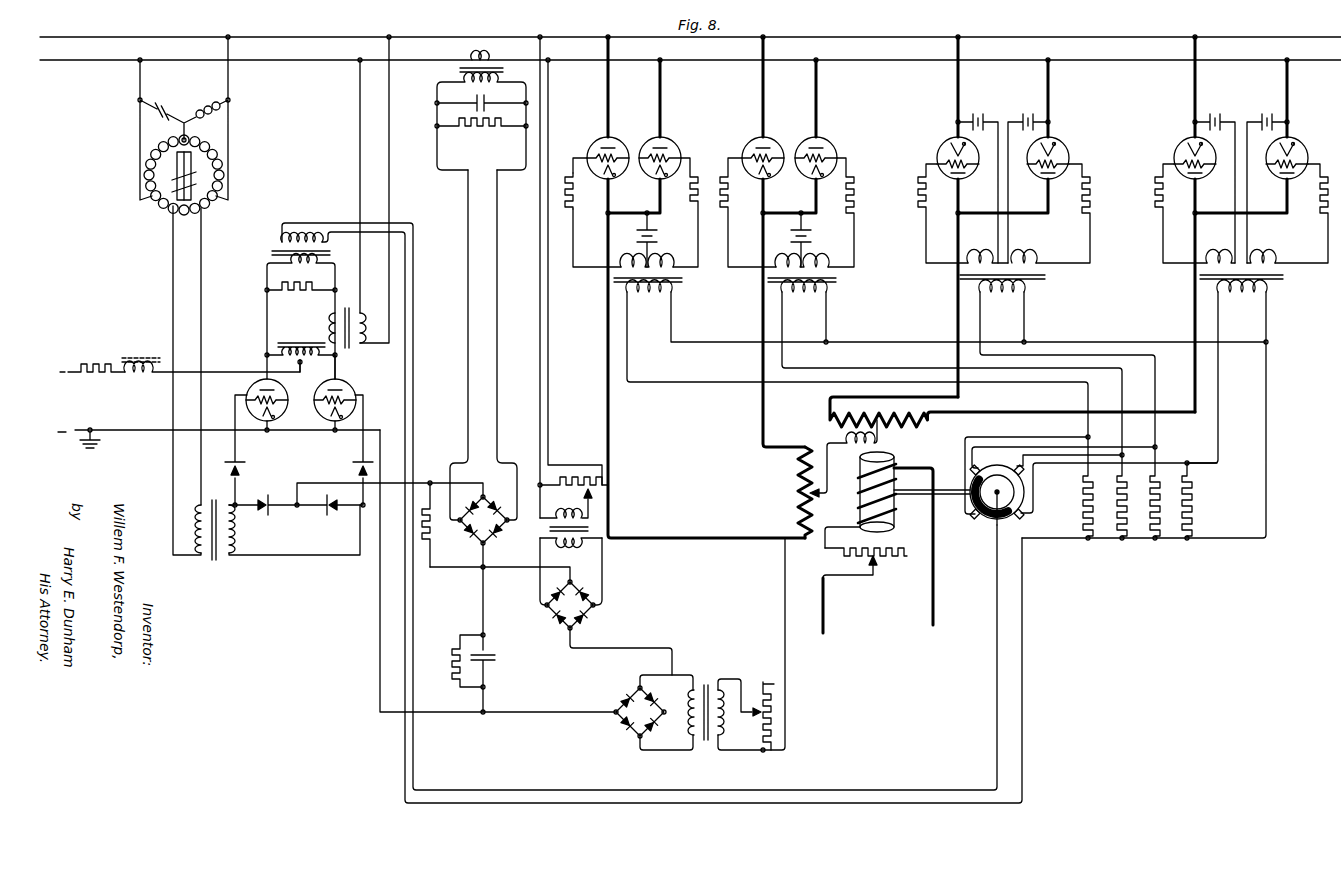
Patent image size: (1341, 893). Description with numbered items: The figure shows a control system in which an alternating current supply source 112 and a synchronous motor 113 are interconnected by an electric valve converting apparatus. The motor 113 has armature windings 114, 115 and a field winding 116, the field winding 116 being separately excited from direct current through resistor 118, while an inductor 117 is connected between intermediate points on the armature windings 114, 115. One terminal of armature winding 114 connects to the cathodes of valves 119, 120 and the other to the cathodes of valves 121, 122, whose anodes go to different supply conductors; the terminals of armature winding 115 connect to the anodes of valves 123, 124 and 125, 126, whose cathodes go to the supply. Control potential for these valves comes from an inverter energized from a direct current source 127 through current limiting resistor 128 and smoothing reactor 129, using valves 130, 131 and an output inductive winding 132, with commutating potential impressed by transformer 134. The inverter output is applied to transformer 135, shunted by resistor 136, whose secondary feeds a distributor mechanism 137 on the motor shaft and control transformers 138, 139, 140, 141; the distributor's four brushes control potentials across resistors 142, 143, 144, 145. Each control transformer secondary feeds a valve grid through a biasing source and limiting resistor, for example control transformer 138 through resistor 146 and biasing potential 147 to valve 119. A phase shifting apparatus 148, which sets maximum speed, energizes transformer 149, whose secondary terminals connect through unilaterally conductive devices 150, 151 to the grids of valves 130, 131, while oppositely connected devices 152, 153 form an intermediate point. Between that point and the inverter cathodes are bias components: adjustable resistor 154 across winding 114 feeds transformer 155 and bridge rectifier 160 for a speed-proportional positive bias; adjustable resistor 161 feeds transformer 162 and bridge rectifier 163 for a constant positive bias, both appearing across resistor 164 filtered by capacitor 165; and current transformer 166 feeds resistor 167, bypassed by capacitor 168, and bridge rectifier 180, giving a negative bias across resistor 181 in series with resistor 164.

The alternating current supply source 112 is at (93, 37).
The motor 113 is at (904, 588).
The armature winding 114 is at (803, 478).
The armature winding 115 is at (824, 417).
The field winding 116 is at (860, 480).
The inductor 117 is at (878, 443).
The resistor 118 is at (897, 542).
The electric valve 119 is at (619, 144).
The electric valve 120 is at (673, 143).
The electric valve 121 is at (773, 143).
The electric valve 122 is at (827, 143).
The electric valve 123 is at (938, 150).
The electric valve 124 is at (1070, 150).
The electric valve 125 is at (1175, 150).
The electric valve 126 is at (1309, 150).
The source of direct current 127 is at (68, 430).
The current limiting resistor 128 is at (96, 368).
The smoothing reactor 129 is at (138, 359).
The electric valve 130 is at (287, 395).
The electric valve 131 is at (347, 395).
The output inductive winding 132 is at (292, 342).
The transformer 134 is at (341, 345).
The transformer 135 is at (274, 254).
The resistor 136 is at (308, 297).
The distributor mechanism 137 is at (992, 518).
The control transformer 138 is at (678, 281).
The control transformer 139 is at (835, 281).
The control transformer 140 is at (1052, 281).
The control transformer 141 is at (1282, 281).
The resistor 142 is at (1086, 527).
The resistor 143 is at (1117, 527).
The resistor 144 is at (1152, 527).
The resistor 145 is at (1185, 527).
The current limiting resistor 146 is at (574, 206).
The source of biasing potential 147 is at (638, 232).
The phase shifting apparatus 148 is at (169, 140).
The transformer 149 is at (216, 558).
The unilaterally conductive device 150 is at (236, 473).
The unilaterally conductive device 151 is at (362, 472).
The unilaterally conductive device 152 is at (267, 516).
The unilaterally conductive device 153 is at (333, 516).
The adjustable resistor 154 is at (762, 682).
The transformer 155 is at (707, 688).
The bridge rectifier 160 is at (632, 726).
The adjustable resistor 161 is at (568, 482).
The transformer 162 is at (551, 529).
The bridge rectifier 163 is at (560, 616).
The resistor 164 is at (451, 646).
The capacitor 165 is at (488, 663).
The current transformer 166 is at (456, 70).
The resistor 167 is at (502, 133).
The capacitor 168 is at (487, 103).
The bridge rectifier 180 is at (468, 528).
The resistor 181 is at (428, 504).